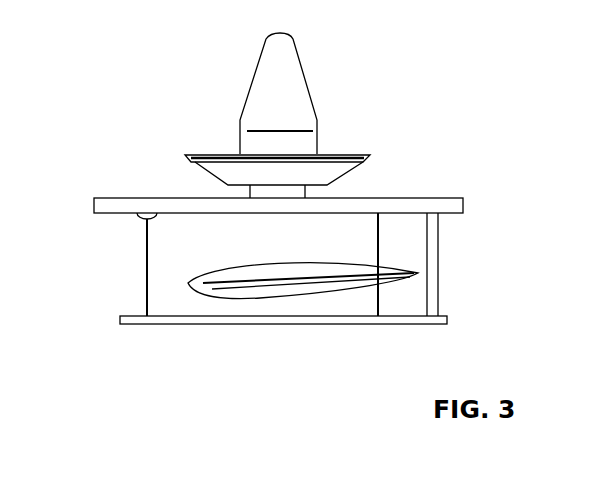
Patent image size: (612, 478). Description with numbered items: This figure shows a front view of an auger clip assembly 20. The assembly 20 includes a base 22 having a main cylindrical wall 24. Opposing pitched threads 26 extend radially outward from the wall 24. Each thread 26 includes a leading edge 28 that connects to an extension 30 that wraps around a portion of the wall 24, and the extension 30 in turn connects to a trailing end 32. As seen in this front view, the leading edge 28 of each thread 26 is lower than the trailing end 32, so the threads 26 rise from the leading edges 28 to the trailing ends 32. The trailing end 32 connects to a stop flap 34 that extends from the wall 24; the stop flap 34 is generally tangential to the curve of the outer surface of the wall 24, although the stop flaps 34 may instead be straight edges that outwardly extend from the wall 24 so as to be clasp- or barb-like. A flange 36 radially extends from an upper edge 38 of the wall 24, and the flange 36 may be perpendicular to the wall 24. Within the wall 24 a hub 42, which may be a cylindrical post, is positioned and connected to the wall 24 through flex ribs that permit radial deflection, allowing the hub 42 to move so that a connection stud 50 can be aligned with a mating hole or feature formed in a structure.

The auger clip assembly 20 is at (138, 47).
The base 22 is at (130, 258).
The main cylindrical wall 24 is at (146, 232).
The pitched thread 26 is at (207, 298).
The leading edge 28 is at (188, 288).
The extension 30 is at (303, 293).
The trailing end 32 is at (410, 280).
The stop flap 34 is at (433, 247).
The flange 36 is at (435, 198).
The upper edge 38 is at (148, 220).
The hub 42 is at (305, 193).
The connection stud 50 is at (302, 88).